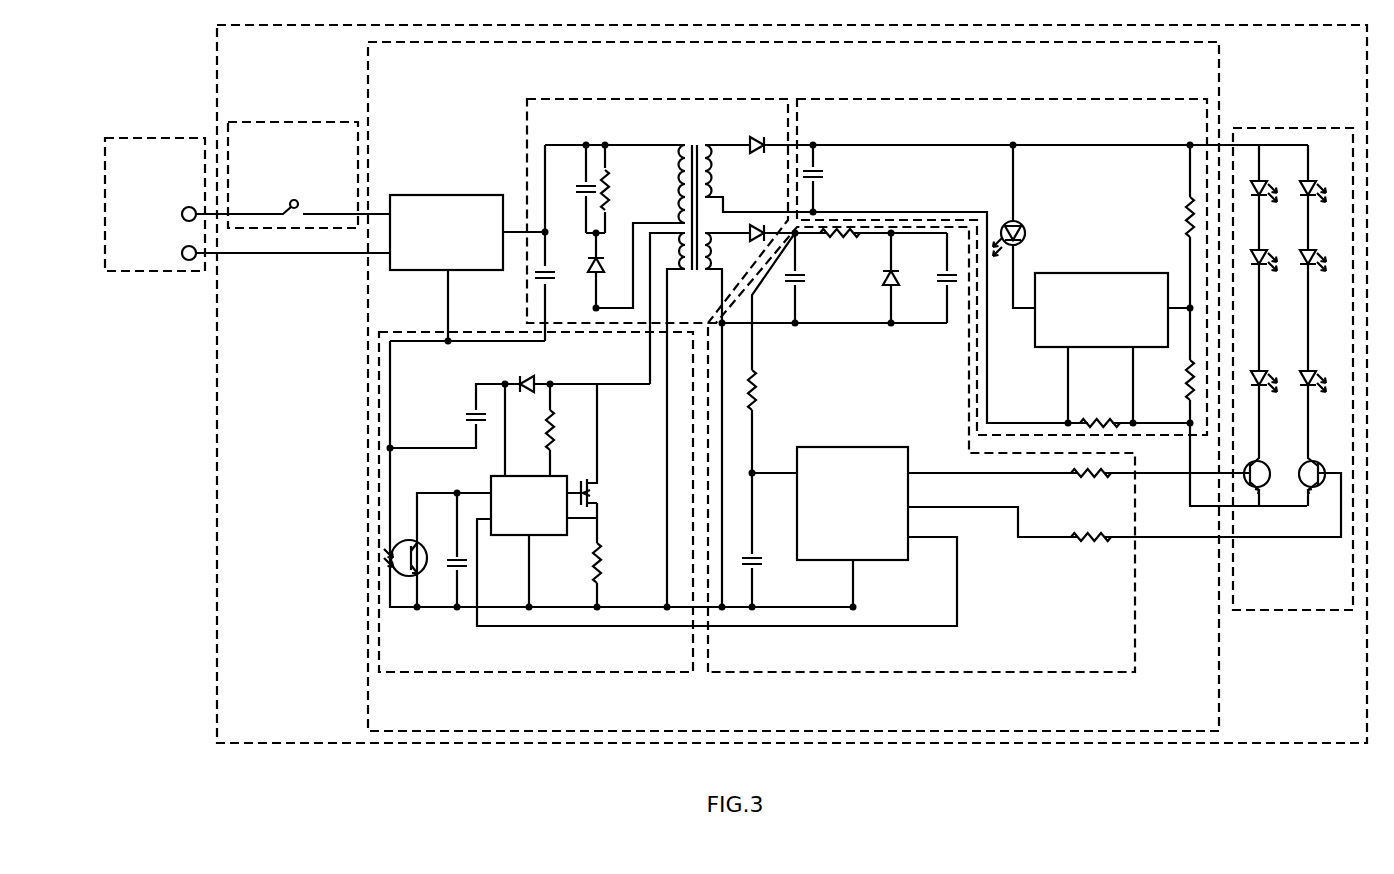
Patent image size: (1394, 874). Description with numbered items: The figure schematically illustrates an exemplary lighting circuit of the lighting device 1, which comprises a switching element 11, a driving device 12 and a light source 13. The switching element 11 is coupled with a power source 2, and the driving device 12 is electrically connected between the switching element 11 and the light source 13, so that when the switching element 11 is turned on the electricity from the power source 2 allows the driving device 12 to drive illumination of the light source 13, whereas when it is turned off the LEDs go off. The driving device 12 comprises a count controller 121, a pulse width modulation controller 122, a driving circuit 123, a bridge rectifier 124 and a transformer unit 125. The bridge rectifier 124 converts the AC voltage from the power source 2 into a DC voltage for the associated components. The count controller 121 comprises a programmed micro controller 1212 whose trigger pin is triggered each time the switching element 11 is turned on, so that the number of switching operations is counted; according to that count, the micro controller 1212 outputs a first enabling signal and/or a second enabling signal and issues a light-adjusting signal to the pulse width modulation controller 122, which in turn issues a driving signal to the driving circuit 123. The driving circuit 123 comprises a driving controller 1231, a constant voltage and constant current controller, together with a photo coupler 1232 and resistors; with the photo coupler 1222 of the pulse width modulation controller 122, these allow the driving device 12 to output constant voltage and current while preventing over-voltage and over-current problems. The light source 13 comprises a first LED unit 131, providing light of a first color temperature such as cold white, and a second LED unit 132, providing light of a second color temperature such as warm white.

The lighting device 1 is at (219, 501).
The power source 2 is at (153, 283).
The switching element 11 is at (291, 128).
The driving device 12 is at (364, 373).
The light source 13 is at (1284, 118).
The count controller 121 is at (1012, 681).
The pulse width modulation controller 122 is at (627, 681).
The driving circuit 123 is at (983, 89).
The bridge rectifier 124 is at (440, 195).
The transformer unit 125 is at (704, 89).
The first LED unit 131 is at (1265, 372).
The second LED unit 132 is at (1315, 372).
The micro controller 1212 is at (868, 550).
The photo coupler 1222 is at (389, 575).
The driving controller 1231 is at (1103, 280).
The photo coupler 1232 is at (1023, 222).